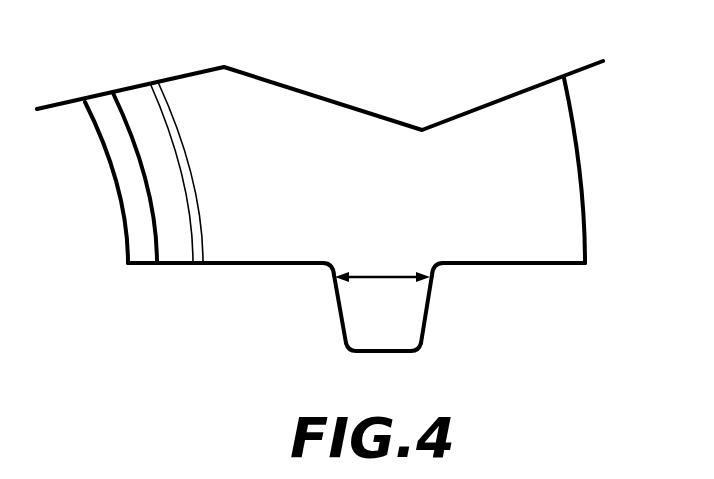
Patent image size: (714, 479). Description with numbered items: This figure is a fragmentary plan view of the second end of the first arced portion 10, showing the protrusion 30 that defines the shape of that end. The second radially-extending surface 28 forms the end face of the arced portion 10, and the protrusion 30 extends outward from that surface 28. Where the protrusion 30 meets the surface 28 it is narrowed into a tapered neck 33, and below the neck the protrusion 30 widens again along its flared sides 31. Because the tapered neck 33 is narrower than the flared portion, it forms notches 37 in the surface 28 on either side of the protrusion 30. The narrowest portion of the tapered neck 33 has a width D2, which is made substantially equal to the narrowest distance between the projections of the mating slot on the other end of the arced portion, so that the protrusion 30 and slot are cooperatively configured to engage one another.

The first arced portion 10 is at (568, 181).
The second radially-extending surface 28 is at (228, 274).
The protrusion 30 is at (385, 327).
The flared sides 31 is at (337, 322).
The tapered neck 33 is at (397, 270).
The notches 37 is at (334, 267).
The width of the narrowest portion of the tapered neck D2 is at (370, 274).